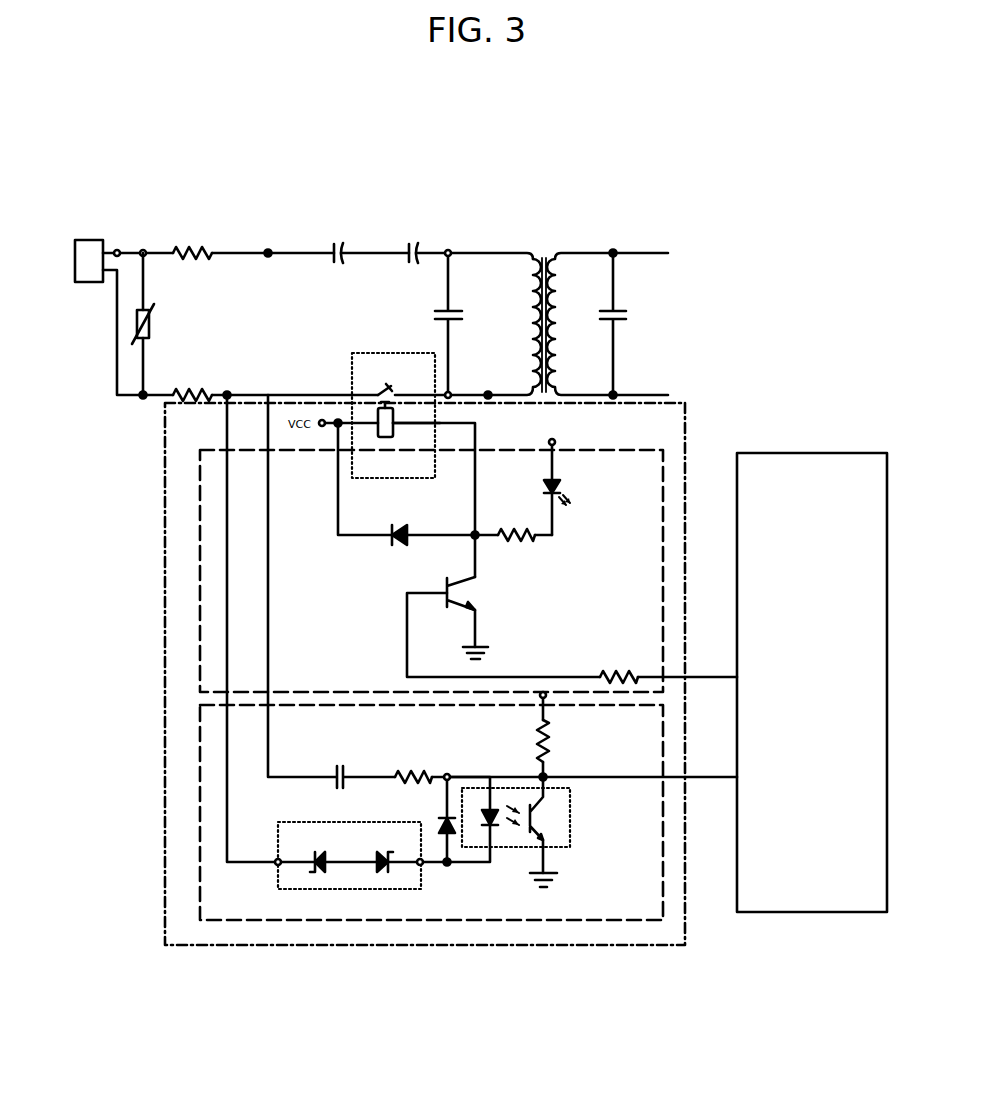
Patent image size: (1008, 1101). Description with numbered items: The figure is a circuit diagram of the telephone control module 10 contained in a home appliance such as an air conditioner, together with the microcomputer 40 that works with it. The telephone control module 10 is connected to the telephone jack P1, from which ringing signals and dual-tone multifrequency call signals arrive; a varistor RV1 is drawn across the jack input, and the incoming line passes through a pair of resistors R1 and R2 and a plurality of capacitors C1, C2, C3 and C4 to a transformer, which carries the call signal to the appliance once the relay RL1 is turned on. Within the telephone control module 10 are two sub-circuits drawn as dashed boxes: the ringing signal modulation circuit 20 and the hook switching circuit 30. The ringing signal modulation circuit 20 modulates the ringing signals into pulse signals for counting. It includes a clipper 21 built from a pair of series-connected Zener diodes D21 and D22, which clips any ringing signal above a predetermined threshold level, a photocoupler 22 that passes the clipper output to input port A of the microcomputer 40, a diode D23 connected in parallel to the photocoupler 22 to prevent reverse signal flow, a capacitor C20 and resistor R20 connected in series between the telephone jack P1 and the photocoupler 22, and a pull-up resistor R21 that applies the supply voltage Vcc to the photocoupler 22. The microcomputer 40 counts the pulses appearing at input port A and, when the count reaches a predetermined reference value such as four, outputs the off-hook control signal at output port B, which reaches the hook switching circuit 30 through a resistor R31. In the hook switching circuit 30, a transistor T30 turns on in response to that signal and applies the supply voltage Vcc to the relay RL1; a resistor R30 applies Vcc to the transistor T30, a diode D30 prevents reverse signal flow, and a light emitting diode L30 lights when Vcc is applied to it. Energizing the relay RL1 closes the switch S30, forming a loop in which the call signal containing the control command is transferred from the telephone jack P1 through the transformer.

The telephone control module 10 is at (158, 622).
The ringing signal modulation circuit 20 is at (192, 740).
The clipper 21 is at (345, 649).
The photocoupler 22 is at (572, 845).
The hook switching circuit 30 is at (192, 668).
The microcomputer 40 is at (812, 682).
The telephone jack P1 is at (80, 273).
The varistor RV1 is at (155, 324).
The resistor R1 is at (192, 246).
The resistor R2 is at (192, 388).
The capacitor C1 is at (336, 272).
The capacitor C2 is at (411, 272).
The capacitor C3 is at (459, 324).
The capacitor C4 is at (625, 324).
The relay RL1 is at (393, 415).
The switch S30 is at (416, 435).
The diode D30 is at (406, 484).
The resistor R30 is at (513, 526).
The light emitting diode L30 is at (571, 479).
The transistor T30 is at (503, 627).
The resistor R31 is at (668, 668).
The capacitor C20 is at (331, 591).
The resistor R20 is at (419, 768).
The pull-up resistor R21 is at (558, 728).
The Zener diode D21 is at (318, 849).
The Zener diode D22 is at (382, 849).
The diode D23 is at (430, 821).